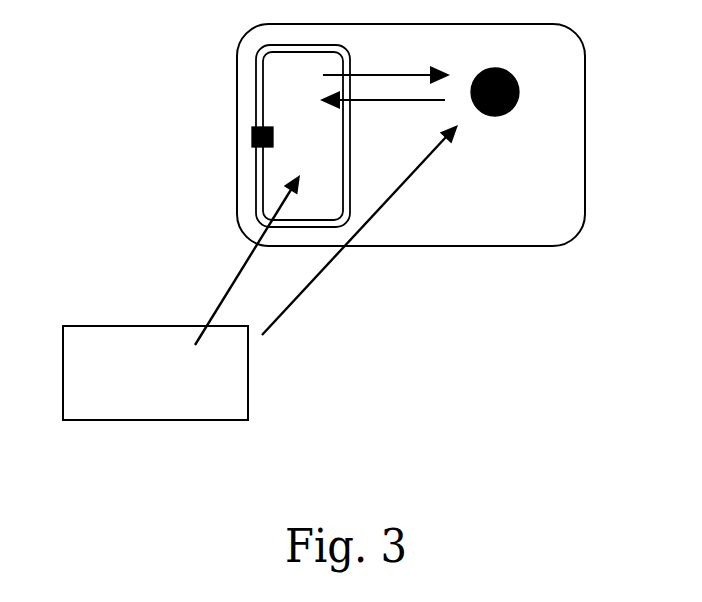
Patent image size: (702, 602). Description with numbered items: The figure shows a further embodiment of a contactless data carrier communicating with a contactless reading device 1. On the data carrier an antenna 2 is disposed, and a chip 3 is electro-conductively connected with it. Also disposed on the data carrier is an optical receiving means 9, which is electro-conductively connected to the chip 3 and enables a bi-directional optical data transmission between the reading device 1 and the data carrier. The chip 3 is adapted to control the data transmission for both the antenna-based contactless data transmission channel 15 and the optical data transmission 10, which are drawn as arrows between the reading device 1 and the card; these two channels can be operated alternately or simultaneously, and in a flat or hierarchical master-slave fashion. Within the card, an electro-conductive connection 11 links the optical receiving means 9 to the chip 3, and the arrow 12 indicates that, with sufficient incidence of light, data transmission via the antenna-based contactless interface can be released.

The reading device 1 is at (125, 325).
The antenna 2 is at (248, 77).
The chip 3 is at (255, 145).
The optical receiving means 9 is at (503, 115).
The optical data transmission 10 is at (283, 320).
The electro-conductive connection 11 is at (402, 75).
The arrow indicating release of data transmission 12 is at (360, 105).
The contactless data transmission channel 15 is at (220, 298).